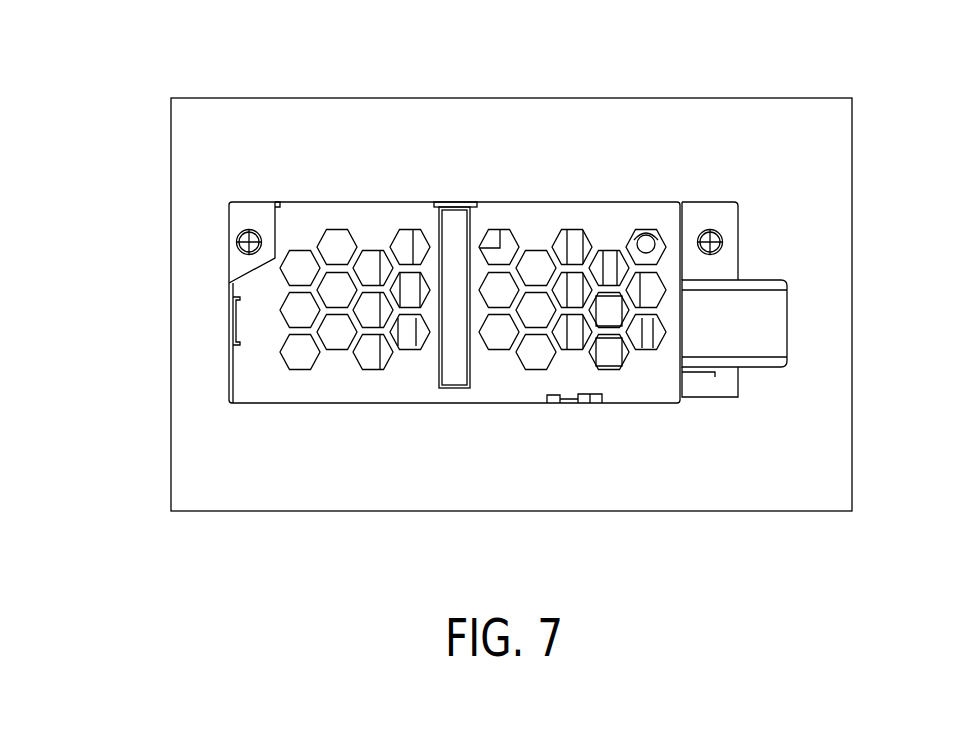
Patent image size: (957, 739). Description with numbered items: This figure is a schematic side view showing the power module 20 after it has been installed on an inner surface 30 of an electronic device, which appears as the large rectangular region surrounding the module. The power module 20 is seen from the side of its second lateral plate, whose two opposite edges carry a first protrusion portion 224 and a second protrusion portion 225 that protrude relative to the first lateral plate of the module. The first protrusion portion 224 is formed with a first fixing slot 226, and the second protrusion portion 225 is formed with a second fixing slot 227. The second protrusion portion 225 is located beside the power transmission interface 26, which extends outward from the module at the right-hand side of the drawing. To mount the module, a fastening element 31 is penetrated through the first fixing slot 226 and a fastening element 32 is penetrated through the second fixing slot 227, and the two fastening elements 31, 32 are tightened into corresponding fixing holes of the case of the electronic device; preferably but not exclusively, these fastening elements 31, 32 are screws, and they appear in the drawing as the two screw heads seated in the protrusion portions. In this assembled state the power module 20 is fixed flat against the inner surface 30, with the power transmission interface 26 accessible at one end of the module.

The power module 20 is at (372, 202).
The inner surface 30 is at (662, 128).
The first protrusion portion 224 is at (245, 212).
The second protrusion portion 225 is at (707, 214).
The first fixing slot 226 is at (238, 234).
The second fixing slot 227 is at (722, 238).
The fastening element 31 is at (232, 252).
The fastening element 32 is at (722, 247).
The power transmission interface 26 is at (758, 323).